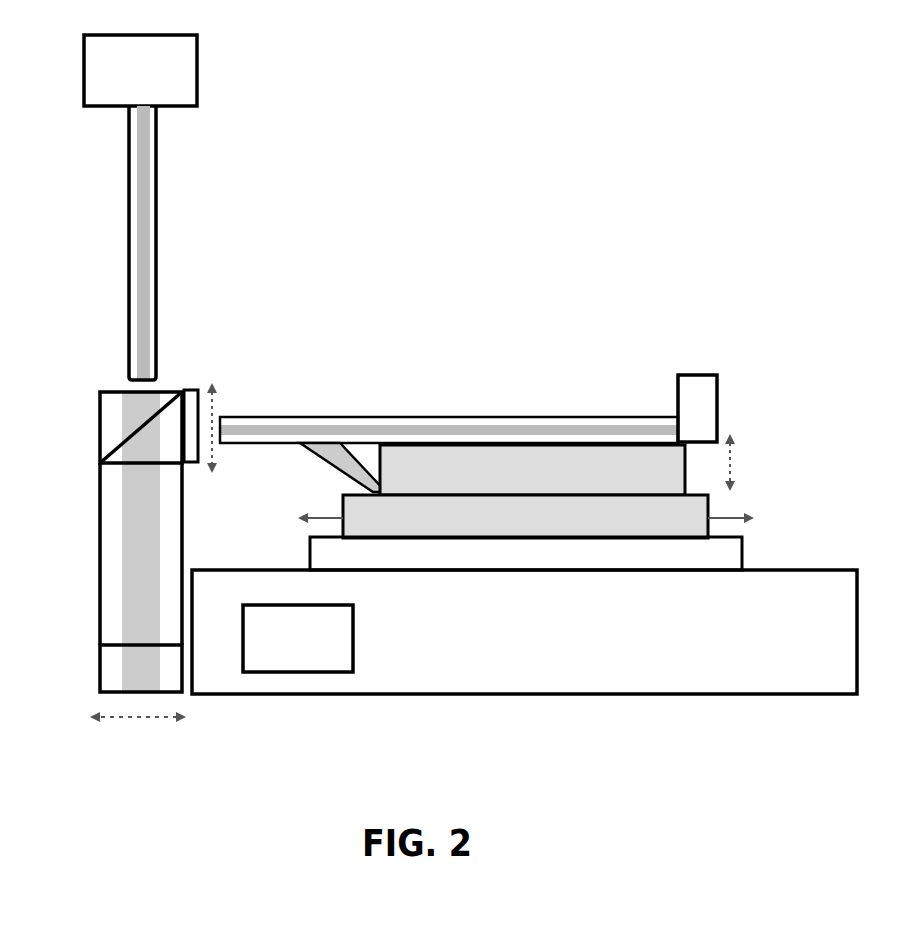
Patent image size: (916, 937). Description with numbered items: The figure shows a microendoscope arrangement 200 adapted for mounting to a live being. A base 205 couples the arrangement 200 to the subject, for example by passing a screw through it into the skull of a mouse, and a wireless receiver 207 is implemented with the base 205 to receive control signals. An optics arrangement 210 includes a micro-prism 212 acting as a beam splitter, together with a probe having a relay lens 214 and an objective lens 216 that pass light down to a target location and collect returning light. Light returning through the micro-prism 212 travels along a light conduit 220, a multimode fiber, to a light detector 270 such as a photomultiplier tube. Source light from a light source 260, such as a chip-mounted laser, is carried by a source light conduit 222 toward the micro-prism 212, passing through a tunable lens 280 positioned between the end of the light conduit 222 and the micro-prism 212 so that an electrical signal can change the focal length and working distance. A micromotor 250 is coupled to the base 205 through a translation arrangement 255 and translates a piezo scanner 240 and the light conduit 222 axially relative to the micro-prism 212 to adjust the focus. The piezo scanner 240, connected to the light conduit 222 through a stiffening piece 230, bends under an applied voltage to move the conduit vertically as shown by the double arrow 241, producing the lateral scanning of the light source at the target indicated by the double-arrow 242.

The microendoscope arrangement 200 is at (636, 43).
The base 205 is at (859, 628).
The wireless receiver 207 is at (354, 636).
The optics arrangement 210 is at (176, 348).
The micro-prism 212 is at (100, 434).
The relay lens 214 is at (100, 592).
The objective lens 216 is at (100, 677).
The light conduit 220 is at (126, 230).
The source light conduit 222 is at (605, 415).
The stiffening piece 230 is at (371, 447).
The piezo scanner 240 is at (733, 462).
The double arrow 241 is at (216, 381).
The double-arrow 242 is at (160, 720).
The micromotor 250 is at (712, 514).
The translation arrangement 255 is at (743, 540).
The light source 260 is at (705, 375).
The light detector 270 is at (172, 35).
The tunable lens 280 is at (188, 388).